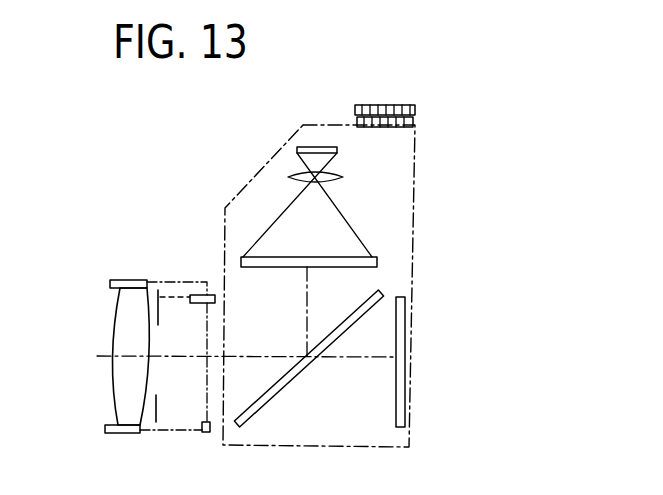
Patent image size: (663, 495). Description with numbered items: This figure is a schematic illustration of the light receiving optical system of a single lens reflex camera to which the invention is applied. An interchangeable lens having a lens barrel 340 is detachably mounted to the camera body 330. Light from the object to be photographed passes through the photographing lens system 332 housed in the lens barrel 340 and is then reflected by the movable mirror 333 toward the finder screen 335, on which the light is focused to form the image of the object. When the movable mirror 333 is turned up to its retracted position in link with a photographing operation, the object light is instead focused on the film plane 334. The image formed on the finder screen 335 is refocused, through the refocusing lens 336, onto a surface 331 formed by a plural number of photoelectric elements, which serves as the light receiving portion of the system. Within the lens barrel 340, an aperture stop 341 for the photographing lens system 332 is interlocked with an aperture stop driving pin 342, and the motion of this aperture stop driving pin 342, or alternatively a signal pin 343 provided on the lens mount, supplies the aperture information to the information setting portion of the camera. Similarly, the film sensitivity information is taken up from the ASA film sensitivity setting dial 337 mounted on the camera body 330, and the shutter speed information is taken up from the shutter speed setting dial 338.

The camera body 330 is at (415, 222).
The surface formed by photoelectric elements 331 is at (337, 150).
The photographing lens system 332 is at (113, 378).
The movable mirror 333 is at (278, 387).
The film plane 334 is at (405, 313).
The finder screen 335 is at (378, 256).
The refocusing lens 336 is at (343, 177).
The ASA film sensitivity setting dial 337 is at (413, 122).
The shutter speed setting dial 338 is at (400, 105).
The lens barrel 340 is at (134, 280).
The aperture stop 341 is at (161, 306).
The aperture stop driving pin 342 is at (208, 292).
The signal pin 343 is at (207, 432).